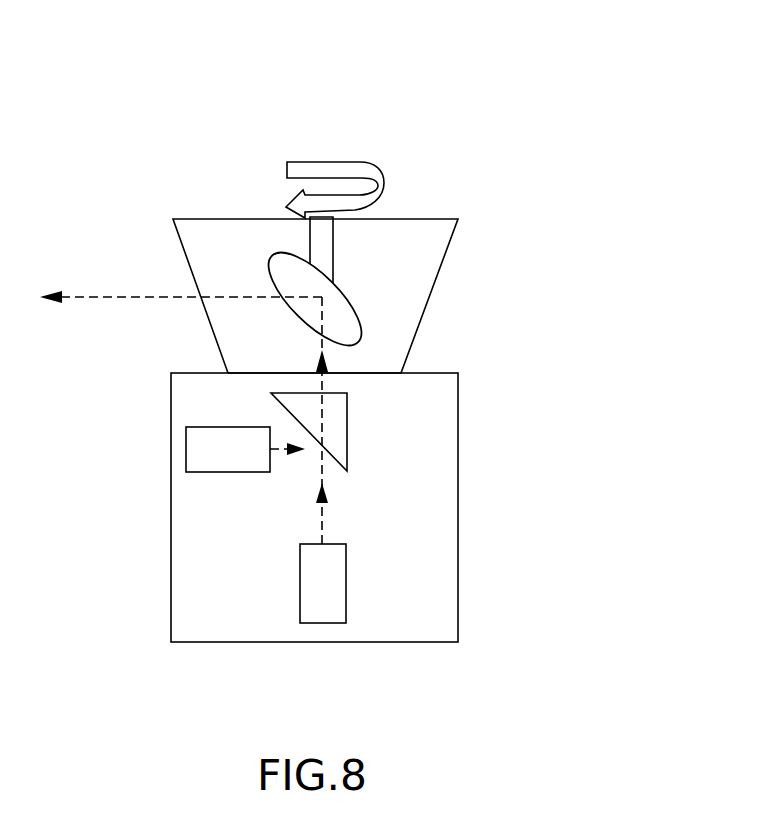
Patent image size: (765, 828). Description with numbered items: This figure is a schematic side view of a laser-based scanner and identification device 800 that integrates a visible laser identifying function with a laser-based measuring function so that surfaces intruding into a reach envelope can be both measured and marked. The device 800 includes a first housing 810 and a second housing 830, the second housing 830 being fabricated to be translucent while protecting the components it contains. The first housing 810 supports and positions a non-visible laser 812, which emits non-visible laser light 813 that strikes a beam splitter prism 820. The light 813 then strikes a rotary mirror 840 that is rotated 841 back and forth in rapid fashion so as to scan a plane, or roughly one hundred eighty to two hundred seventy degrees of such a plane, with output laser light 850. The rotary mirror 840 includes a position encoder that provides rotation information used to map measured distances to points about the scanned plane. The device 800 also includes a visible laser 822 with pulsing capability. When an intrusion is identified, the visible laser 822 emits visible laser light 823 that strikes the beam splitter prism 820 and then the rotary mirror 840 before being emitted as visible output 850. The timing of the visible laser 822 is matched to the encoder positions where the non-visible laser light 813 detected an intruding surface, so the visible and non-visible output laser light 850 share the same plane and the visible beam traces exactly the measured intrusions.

The laser-based scanner and identification device 800 is at (150, 75).
The first housing 810 is at (458, 595).
The non-visible laser 812 is at (300, 593).
The non-visible laser light 813 is at (322, 520).
The beam splitter prism 820 is at (347, 410).
The visible laser 822 is at (185, 455).
The visible laser light 823 is at (292, 450).
The second housing 830 is at (430, 297).
The rotary mirror 840 is at (340, 282).
The rotation of the rotary mirror 841 is at (333, 161).
The output laser light 850 is at (138, 295).